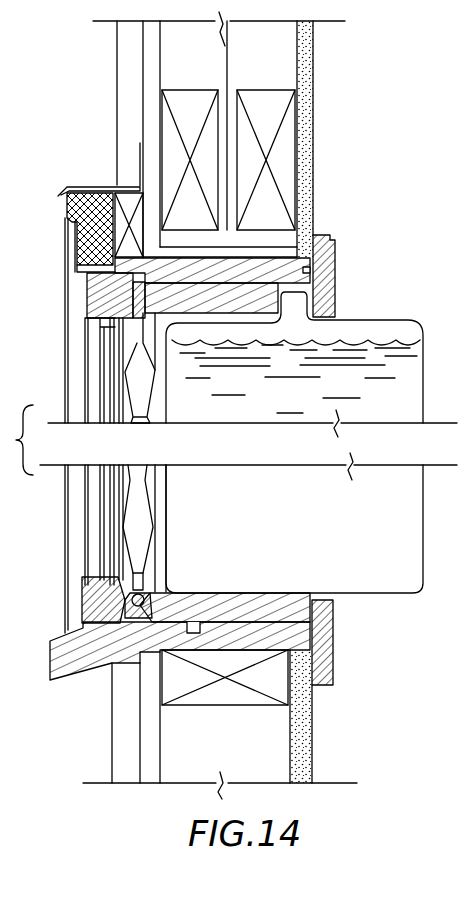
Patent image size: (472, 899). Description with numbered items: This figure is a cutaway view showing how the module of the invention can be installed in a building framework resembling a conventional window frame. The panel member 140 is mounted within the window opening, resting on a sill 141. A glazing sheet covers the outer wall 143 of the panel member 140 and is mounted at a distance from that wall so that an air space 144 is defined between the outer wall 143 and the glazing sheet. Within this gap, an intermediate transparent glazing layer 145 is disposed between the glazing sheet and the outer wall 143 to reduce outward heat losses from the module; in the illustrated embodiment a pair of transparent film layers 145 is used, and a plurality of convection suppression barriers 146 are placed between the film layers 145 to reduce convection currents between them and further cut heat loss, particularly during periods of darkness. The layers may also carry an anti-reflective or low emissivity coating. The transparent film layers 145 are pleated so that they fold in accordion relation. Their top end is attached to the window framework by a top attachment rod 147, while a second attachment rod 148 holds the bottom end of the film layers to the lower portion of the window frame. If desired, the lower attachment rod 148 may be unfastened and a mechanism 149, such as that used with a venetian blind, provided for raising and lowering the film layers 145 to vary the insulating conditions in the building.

The panel member 140 is at (346, 496).
The sill 141 is at (340, 637).
The outer wall 143 is at (168, 408).
The air space 144 is at (179, 554).
The intermediate transparent glazing layer 145 is at (133, 511).
The convection suppression barriers 146 is at (138, 341).
The top attachment rod 147 is at (131, 299).
The second attachment rod 148 is at (179, 575).
The mechanism 149 is at (138, 333).